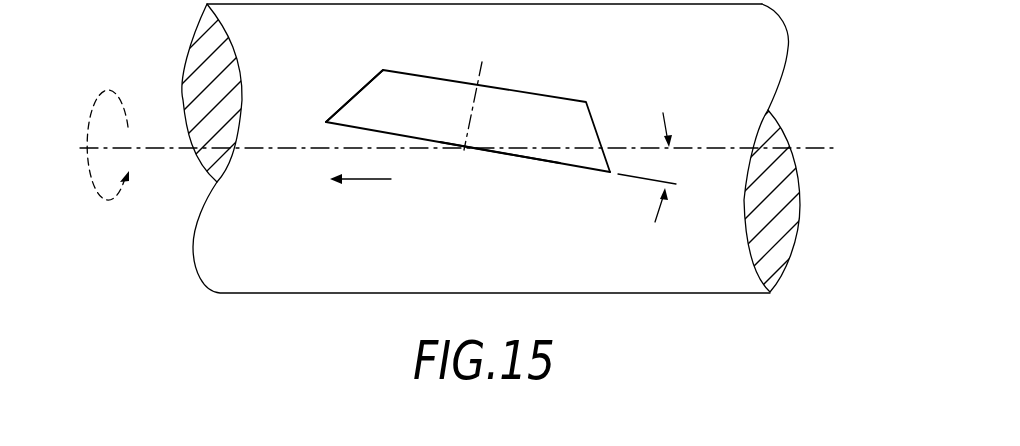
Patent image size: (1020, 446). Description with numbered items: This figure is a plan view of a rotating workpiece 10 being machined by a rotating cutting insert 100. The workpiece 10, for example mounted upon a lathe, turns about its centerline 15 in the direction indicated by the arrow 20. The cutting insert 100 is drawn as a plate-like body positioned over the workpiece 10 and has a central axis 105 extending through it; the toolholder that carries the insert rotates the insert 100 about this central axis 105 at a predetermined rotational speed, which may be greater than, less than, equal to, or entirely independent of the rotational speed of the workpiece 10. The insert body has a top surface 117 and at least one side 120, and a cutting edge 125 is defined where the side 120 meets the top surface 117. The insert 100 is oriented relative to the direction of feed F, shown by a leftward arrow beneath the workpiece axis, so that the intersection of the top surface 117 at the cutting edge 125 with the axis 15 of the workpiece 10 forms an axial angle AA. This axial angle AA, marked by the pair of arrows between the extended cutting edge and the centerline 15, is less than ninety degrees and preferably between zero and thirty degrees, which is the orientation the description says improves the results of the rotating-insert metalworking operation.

The workpiece 10 is at (775, 47).
The centerline 15 is at (160, 146).
The arrow 20 is at (108, 200).
The cutting insert 100 is at (534, 102).
The central axis 105 is at (478, 75).
The top surface 117 is at (552, 165).
The side 120 is at (360, 90).
The cutting edge 125 is at (510, 158).
The axial angle AA is at (672, 166).
The direction of feed F is at (369, 180).